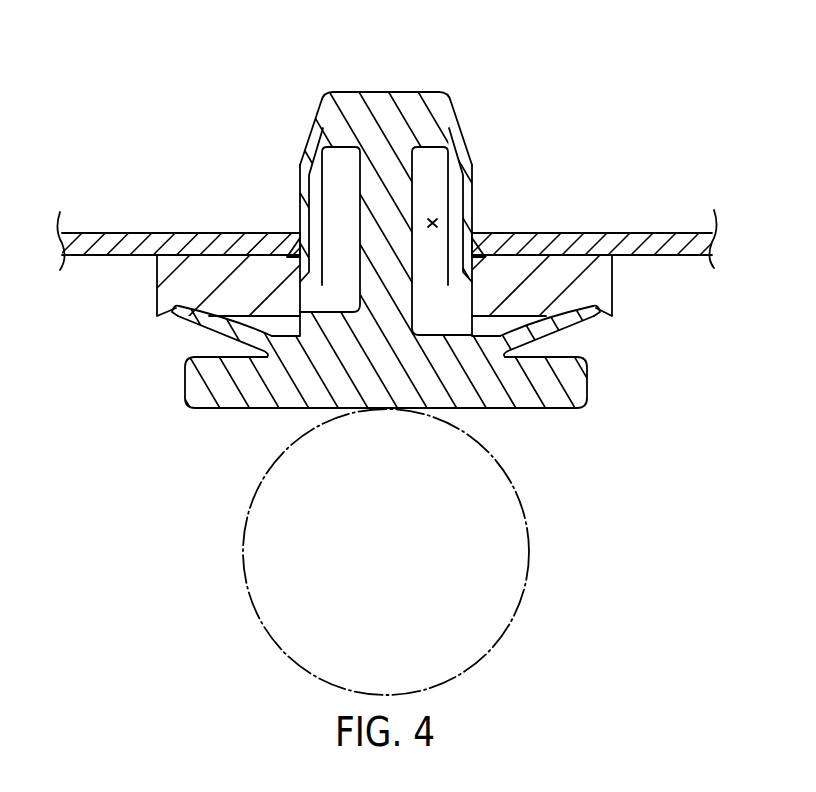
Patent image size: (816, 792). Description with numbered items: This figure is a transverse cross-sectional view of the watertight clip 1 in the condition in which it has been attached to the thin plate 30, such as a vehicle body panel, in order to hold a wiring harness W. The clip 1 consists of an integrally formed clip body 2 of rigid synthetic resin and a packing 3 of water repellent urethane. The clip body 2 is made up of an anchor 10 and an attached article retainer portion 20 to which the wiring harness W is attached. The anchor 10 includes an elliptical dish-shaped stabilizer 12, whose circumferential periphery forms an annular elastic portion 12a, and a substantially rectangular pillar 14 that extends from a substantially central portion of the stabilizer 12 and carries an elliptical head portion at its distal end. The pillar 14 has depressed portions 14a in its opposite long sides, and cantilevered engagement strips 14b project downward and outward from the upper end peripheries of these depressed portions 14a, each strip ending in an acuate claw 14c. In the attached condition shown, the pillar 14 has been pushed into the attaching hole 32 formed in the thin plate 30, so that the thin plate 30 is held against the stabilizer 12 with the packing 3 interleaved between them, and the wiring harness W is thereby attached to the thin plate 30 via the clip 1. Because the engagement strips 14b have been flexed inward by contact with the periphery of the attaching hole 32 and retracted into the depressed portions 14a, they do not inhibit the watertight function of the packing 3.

The watertight clip 1 is at (608, 92).
The watertight clip body 2 is at (443, 63).
The packing 3 is at (597, 288).
The anchor 10 is at (383, 107).
The stabilizer 12 is at (432, 337).
The annular elastic portion 12a is at (599, 311).
The pillar 14 is at (378, 210).
The depressed portion 14a is at (434, 223).
The engagement strip 14b is at (310, 195).
The claw 14c is at (288, 256).
The attached article retainer portion 20 is at (222, 387).
The thin plate 30 is at (367, 213).
The attaching hole 32 is at (297, 240).
The wiring harness W is at (530, 552).